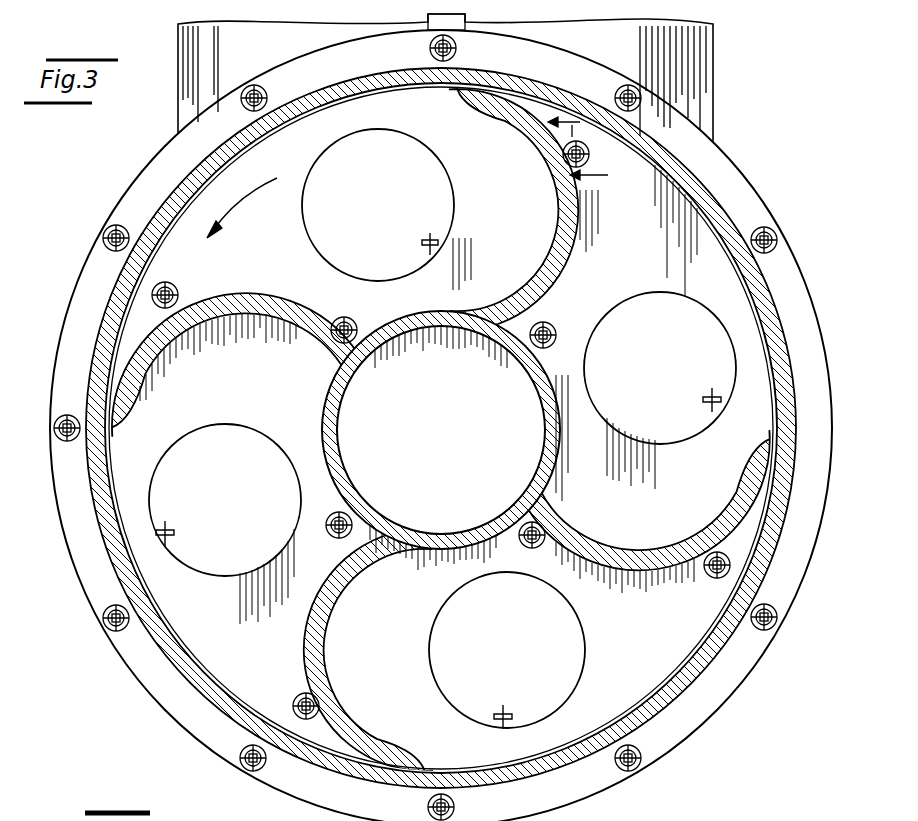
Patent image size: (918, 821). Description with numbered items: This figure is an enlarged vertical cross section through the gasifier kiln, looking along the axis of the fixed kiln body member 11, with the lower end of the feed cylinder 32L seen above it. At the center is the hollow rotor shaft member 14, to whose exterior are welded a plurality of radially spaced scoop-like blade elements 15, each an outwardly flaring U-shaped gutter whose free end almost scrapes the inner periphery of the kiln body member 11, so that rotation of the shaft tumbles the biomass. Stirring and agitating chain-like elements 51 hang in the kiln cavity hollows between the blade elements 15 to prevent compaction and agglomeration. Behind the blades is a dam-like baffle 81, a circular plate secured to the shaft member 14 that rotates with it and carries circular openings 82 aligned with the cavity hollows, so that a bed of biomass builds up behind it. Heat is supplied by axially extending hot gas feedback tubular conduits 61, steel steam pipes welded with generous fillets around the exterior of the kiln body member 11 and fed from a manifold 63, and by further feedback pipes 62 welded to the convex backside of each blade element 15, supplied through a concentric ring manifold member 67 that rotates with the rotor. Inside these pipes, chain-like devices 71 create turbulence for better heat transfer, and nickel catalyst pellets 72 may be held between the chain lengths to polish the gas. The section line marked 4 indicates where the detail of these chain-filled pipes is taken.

The kiln body member 11 is at (100, 343).
The hollow shaft member 14 is at (547, 427).
The scoop-like blade element 15 is at (230, 290).
The lower end of lower cylinder 32L is at (715, 46).
The section line 4- 4 is at (577, 155).
The chain-like element 51 is at (426, 243).
The hot gas feedback tubular conduit 61 is at (256, 85).
The hot gas feedback pipe 62 is at (342, 317).
The manifold 63 is at (78, 280).
The concentric ring manifold member 67 is at (458, 42).
The chain-like device 71 is at (641, 104).
The catalyst pellet 72 is at (53, 430).
The dam-like baffle 81 is at (505, 205).
The circular opening 82 is at (321, 156).